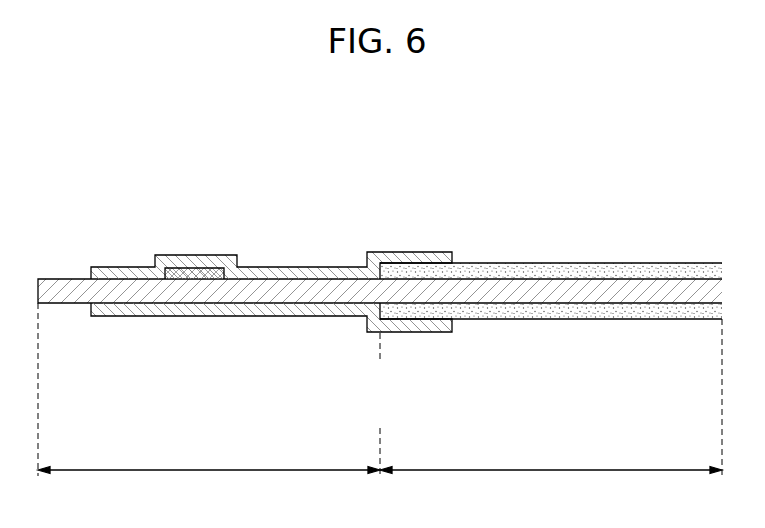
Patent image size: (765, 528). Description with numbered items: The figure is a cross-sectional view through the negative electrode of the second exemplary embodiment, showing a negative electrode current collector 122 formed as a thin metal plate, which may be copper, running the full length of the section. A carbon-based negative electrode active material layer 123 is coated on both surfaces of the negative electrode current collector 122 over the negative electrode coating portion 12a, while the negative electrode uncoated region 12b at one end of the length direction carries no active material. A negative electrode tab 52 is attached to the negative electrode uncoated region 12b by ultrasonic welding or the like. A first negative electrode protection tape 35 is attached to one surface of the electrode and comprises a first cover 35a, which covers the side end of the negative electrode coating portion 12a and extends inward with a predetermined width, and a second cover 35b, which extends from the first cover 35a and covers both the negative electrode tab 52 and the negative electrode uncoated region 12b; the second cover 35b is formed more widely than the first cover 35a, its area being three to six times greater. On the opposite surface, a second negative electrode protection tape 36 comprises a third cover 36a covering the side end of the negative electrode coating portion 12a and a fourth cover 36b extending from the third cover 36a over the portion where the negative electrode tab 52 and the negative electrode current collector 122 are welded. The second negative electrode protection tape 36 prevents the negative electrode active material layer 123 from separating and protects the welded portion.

The negative electrode current collector 122 is at (120, 288).
The negative electrode active material layer 123 is at (560, 272).
The negative electrode tab 52 is at (200, 272).
The first negative electrode protection tape 35 is at (271, 219).
The first cover 35a is at (409, 236).
The second cover 35b is at (337, 272).
The second negative electrode protection tape 36 is at (271, 363).
The third cover 36a is at (409, 348).
The fourth cover 36b is at (347, 308).
The negative electrode coating portion 12a is at (551, 411).
The negative electrode uncoated region 12b is at (209, 403).